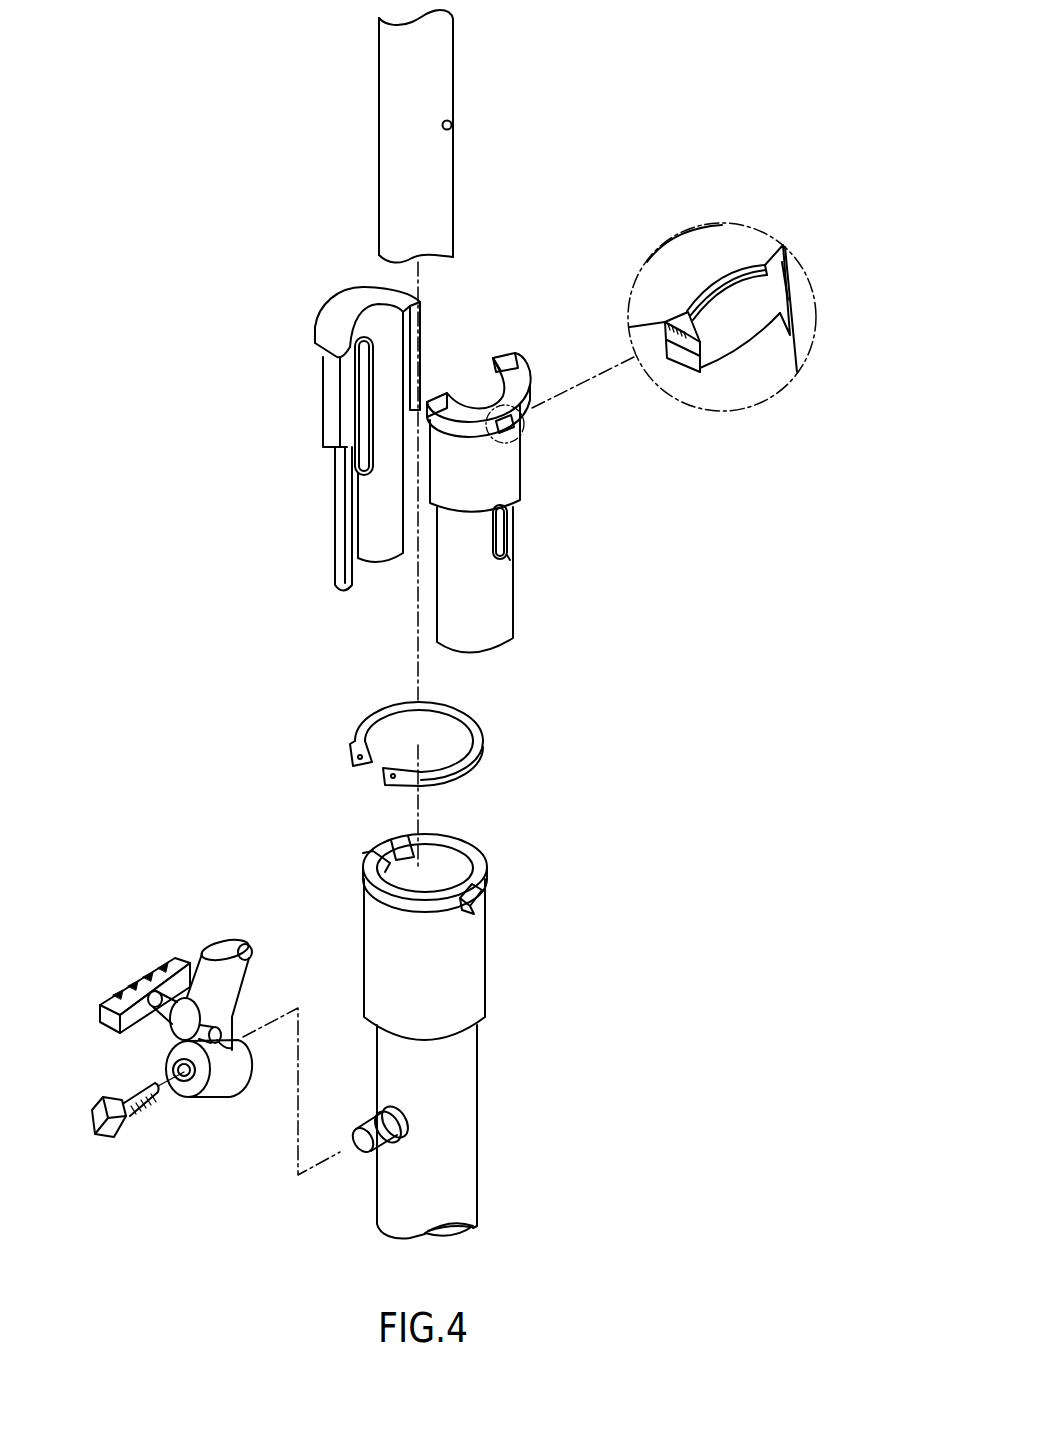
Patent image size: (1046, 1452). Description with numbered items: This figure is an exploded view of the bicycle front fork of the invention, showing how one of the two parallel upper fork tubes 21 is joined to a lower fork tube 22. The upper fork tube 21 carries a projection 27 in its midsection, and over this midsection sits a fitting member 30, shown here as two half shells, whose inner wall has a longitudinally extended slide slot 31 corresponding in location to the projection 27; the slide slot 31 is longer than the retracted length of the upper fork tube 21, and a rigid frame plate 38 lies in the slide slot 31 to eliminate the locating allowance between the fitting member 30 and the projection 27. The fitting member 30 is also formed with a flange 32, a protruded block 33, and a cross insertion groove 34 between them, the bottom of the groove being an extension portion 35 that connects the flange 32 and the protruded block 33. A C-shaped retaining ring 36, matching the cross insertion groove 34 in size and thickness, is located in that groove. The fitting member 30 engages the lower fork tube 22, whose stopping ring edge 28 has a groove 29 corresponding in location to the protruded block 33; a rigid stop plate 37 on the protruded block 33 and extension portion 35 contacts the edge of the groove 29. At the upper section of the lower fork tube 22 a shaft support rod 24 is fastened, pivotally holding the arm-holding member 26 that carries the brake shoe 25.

The upper fork tube 21 is at (444, 70).
The lower fork tube 22 is at (460, 1172).
The shaft support rod 24 is at (372, 1147).
The brake shoe 25 is at (123, 987).
The arm-holding member 26 is at (208, 958).
The projection 27 is at (452, 125).
The stopping ring edge 28 is at (473, 852).
The groove 29 is at (460, 903).
The fitting member 30 is at (340, 520).
The slide slot 31 is at (358, 455).
The flange 32 is at (322, 348).
The protruded block 33 is at (745, 330).
The cross insertion groove 34 is at (740, 288).
The extension portion 35 is at (683, 317).
The C-shaped retaining ring 36 is at (392, 712).
The rigid stop plate 37 is at (785, 303).
The rigid frame plate 38 is at (506, 558).